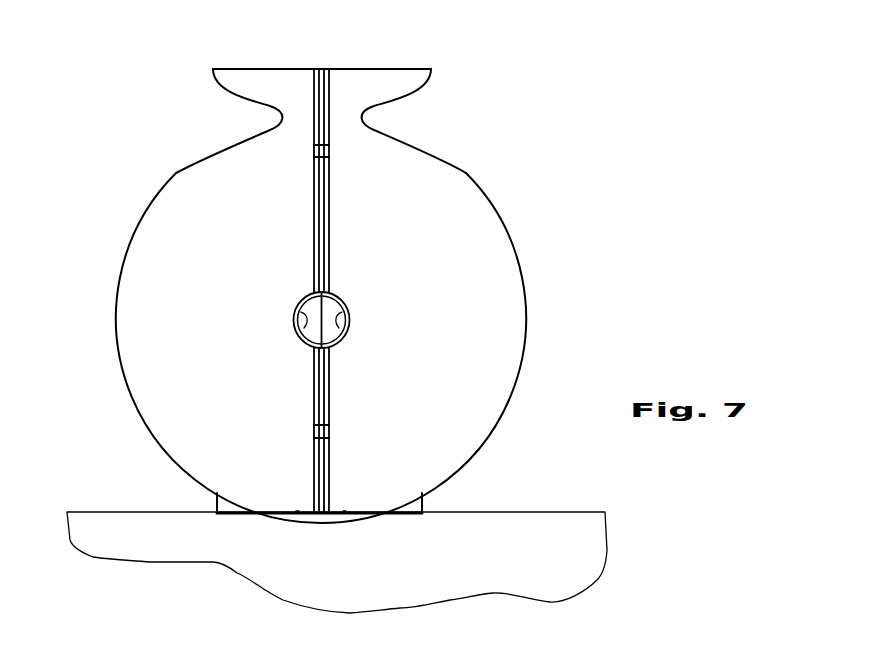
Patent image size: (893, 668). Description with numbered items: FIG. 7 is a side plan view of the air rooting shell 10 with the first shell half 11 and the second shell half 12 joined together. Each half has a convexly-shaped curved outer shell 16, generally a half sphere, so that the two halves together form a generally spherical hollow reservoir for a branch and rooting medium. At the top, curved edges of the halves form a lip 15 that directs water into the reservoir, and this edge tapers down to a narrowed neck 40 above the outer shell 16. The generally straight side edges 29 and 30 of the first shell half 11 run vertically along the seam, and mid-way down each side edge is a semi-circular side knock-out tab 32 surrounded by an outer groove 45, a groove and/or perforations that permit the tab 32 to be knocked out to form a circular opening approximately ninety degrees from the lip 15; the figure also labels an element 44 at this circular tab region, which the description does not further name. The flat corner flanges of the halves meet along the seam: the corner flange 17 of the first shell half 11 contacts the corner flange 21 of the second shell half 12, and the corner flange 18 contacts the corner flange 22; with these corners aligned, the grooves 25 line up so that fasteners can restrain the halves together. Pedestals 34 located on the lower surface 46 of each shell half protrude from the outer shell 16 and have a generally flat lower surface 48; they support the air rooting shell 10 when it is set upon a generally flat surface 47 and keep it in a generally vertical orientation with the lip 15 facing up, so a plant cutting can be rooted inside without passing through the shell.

The air rooting shell 10 is at (518, 88).
The first shell half 11 is at (177, 175).
The second shell half 12 is at (477, 187).
The lip 15 is at (242, 67).
The curved outer shell 16 is at (525, 278).
The corner flange 17 is at (317, 235).
The corner flange 18 is at (313, 475).
The corner flange 21 is at (330, 213).
The corner flange 22 is at (330, 487).
The grooves 25 is at (315, 145).
The side edge 29 is at (320, 66).
The side edge 30 is at (327, 66).
The side knock-out tab 32 is at (298, 309).
The pedestals 34 is at (230, 505).
The narrowed neck 40 is at (372, 117).
The ring coupler 44 is at (345, 343).
The outer groove 45 is at (308, 295).
The lower surface 46 is at (298, 507).
The flat surface 47 is at (548, 552).
The flat lower surface 48 is at (239, 514).